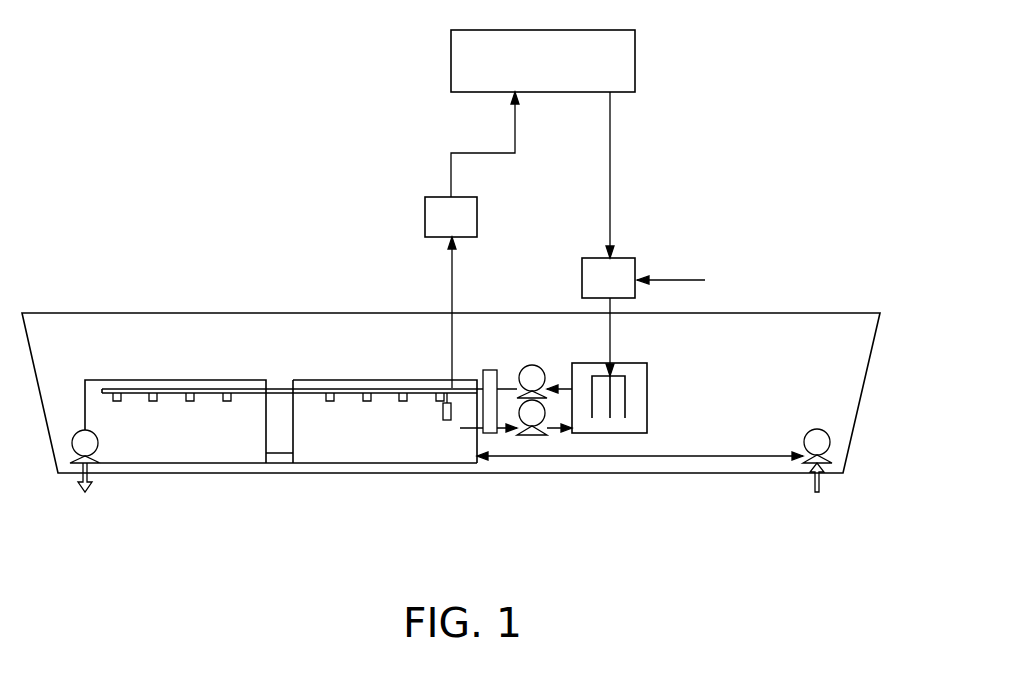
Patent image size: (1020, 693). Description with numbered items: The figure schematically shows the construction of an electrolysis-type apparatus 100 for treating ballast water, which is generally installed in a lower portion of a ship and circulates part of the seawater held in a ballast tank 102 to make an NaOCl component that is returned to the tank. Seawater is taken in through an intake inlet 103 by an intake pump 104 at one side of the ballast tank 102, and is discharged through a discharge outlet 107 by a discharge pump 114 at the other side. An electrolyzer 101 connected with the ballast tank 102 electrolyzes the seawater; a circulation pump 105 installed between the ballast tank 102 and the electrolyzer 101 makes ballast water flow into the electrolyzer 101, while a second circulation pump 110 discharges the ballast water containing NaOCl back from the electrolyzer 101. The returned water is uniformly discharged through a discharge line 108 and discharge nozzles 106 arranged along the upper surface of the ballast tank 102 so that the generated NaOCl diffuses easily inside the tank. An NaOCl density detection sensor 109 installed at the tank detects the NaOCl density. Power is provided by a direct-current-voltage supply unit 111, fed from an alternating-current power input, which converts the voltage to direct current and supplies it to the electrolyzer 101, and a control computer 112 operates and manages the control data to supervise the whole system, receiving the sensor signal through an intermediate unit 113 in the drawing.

The apparatus for treating ballast water 100 is at (340, 180).
The electrolyzer 101 is at (620, 433).
The ballast tank 102 is at (363, 452).
The intake inlet 103 is at (812, 488).
The intake pump 104 is at (806, 432).
The circulation pump 105 is at (533, 436).
The discharge nozzle 106 is at (232, 401).
The discharge outlet 107 is at (90, 484).
The discharge line 108 is at (312, 389).
The NaOCl density detection sensor 109 is at (447, 420).
The circulation pump 110 is at (532, 365).
The direct-current-voltage supply unit 111 is at (632, 258).
The control computer 112 is at (637, 52).
The sensor controller 113 is at (477, 213).
The discharge pump 114 is at (97, 448).